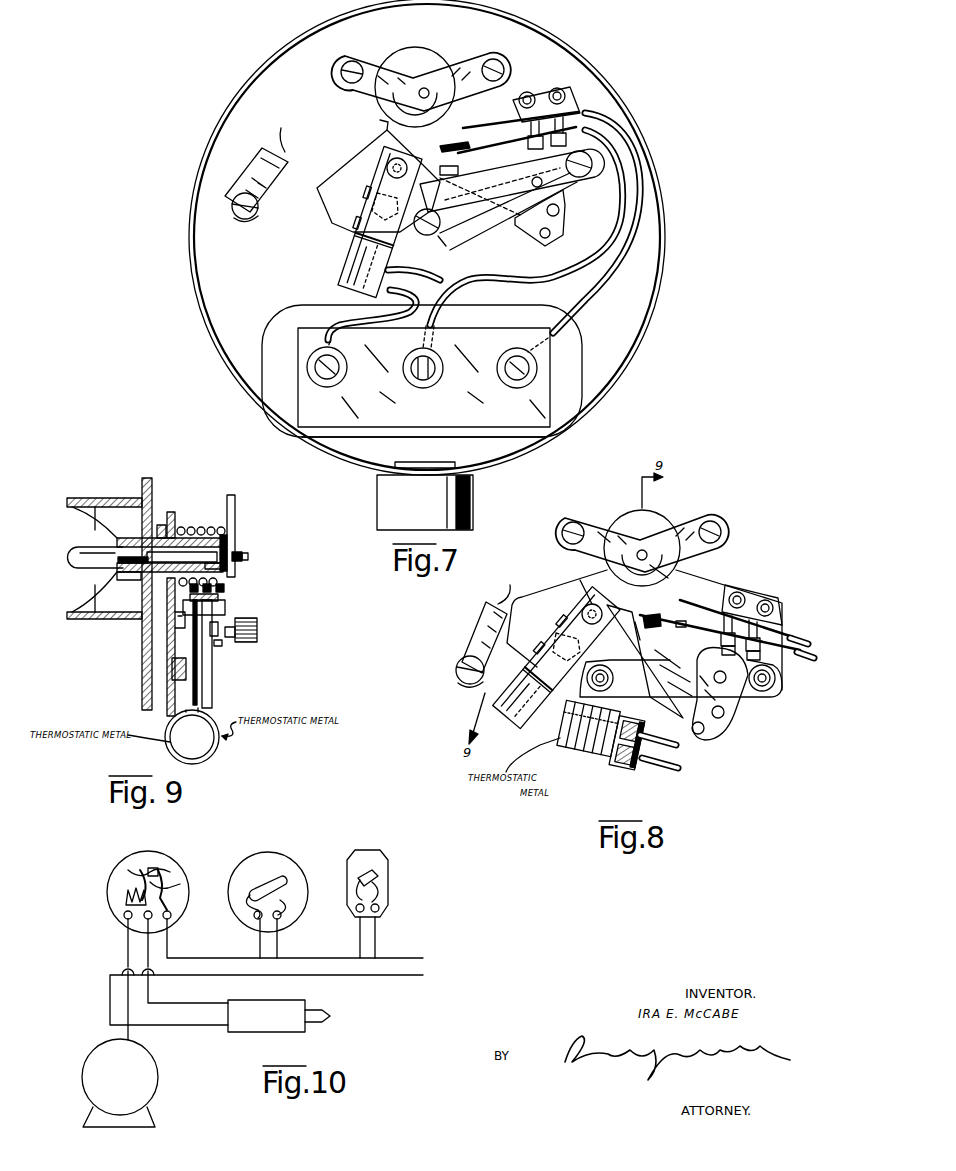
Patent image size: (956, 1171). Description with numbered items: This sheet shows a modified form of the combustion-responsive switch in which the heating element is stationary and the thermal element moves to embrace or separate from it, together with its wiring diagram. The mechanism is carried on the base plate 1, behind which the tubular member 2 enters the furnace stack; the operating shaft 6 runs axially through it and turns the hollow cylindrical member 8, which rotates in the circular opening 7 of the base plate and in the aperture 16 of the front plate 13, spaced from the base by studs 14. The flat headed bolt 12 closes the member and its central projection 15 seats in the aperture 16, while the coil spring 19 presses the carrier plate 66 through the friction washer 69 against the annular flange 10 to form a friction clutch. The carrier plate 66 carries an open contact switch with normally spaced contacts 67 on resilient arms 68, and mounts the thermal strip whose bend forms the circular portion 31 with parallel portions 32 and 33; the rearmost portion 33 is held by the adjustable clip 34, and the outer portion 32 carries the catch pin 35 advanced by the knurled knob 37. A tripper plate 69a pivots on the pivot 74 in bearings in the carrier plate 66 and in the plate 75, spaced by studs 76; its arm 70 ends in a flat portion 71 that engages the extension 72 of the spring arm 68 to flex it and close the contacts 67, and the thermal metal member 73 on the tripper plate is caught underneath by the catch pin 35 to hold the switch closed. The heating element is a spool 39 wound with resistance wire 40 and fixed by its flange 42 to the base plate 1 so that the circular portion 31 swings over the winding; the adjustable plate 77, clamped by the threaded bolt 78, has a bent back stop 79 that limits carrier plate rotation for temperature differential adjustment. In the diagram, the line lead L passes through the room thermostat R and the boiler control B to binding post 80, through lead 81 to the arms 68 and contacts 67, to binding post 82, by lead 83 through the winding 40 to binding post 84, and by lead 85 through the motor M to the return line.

In FIG. 7, the base plate 1 is at (638, 336).
In FIG. 9, the base plate 1 is at (140, 490).
In FIG. 9, the tubular member 2 is at (70, 518).
In FIG. 9, the operating shaft 6 is at (73, 553).
In FIG. 9, the circular opening 7 is at (145, 544).
In FIG. 9, the hollow cylindrical member 8 is at (124, 580).
In FIG. 9, the annular flange 10 is at (162, 524).
In FIG. 9, the flat headed bolt 12 is at (222, 594).
In FIG. 7, the front plate 13 is at (372, 64).
In FIG. 9, the front plate 13 is at (237, 540).
In FIG. 8, the front plate 13 is at (692, 528).
In FIG. 7, the studs 14 is at (341, 77).
In FIG. 8, the studs 14 is at (585, 530).
In FIG. 9, the central projection 15 is at (250, 556).
In FIG. 8, the central projection 15 is at (668, 580).
In FIG. 7, the aperture 16 is at (415, 87).
In FIG. 9, the aperture 16 is at (242, 568).
In FIG. 8, the aperture 16 is at (665, 525).
In FIG. 9, the coil spring 19 is at (226, 520).
In FIG. 7, the circular portion 31 is at (345, 264).
In FIG. 9, the circular portion 31 is at (218, 740).
In FIG. 8, the circular portion 31 is at (528, 722).
In FIG. 7, the outer parallel portion 32 is at (355, 233).
In FIG. 9, the outer parallel portion 32 is at (212, 702).
In FIG. 8, the outer parallel portion 32 is at (575, 692).
In FIG. 9, the rearmost parallel portion 33 is at (168, 710).
In FIG. 7, the adjustable clip 34 is at (358, 198).
In FIG. 9, the adjustable clip 34 is at (168, 668).
In FIG. 8, the adjustable clip 34 is at (555, 656).
In FIG. 7, the catch pin 35 is at (382, 125).
In FIG. 9, the catch pin 35 is at (168, 622).
In FIG. 8, the catch pin 35 is at (580, 612).
In FIG. 7, the knurled knob 37 is at (387, 166).
In FIG. 9, the knurled knob 37 is at (258, 630).
In FIG. 8, the knurled knob 37 is at (588, 604).
In FIG. 8, the spool 39 is at (560, 745).
In FIG. 8, the resistance wire 40 is at (578, 764).
In FIG. 10, the resistance wire 40 is at (118, 878).
In FIG. 8, the flange 42 is at (640, 772).
In FIG. 7, the carrier plate 66 is at (328, 200).
In FIG. 9, the carrier plate 66 is at (172, 512).
In FIG. 8, the carrier plate 66 is at (548, 592).
In FIG. 7, the contacts 67 is at (480, 130).
In FIG. 8, the contacts 67 is at (682, 610).
In FIG. 10, the contacts 67 is at (140, 866).
In FIG. 7, the resilient arms 68 is at (517, 106).
In FIG. 8, the resilient arms 68 is at (728, 592).
In FIG. 10, the resilient arms 68 is at (170, 862).
In FIG. 9, the friction washer 69 is at (200, 527).
In FIG. 7, the tripper plate 69a is at (568, 200).
In FIG. 8, the tripper plate 69a is at (732, 716).
In FIG. 7, the arm 70 is at (498, 176).
In FIG. 8, the arm 70 is at (678, 708).
In FIG. 7, the flat portion 71 is at (440, 164).
In FIG. 9, the flat portion 71 is at (258, 620).
In FIG. 8, the flat portion 71 is at (679, 627).
In FIG. 7, the extension 72 is at (470, 154).
In FIG. 9, the extension 72 is at (226, 610).
In FIG. 8, the extension 72 is at (646, 612).
In FIG. 7, the thermal metal member 73 is at (452, 222).
In FIG. 8, the thermal metal member 73 is at (645, 660).
In FIG. 7, the pivot 74 is at (540, 190).
In FIG. 9, the pivot 74 is at (214, 644).
In FIG. 8, the pivot 74 is at (725, 685).
In FIG. 7, the plate 75 is at (448, 246).
In FIG. 9, the plate 75 is at (226, 646).
In FIG. 7, the studs 76 is at (585, 180).
In FIG. 8, the studs 76 is at (610, 690).
In FIG. 7, the adjustable plate 77 is at (268, 170).
In FIG. 8, the adjustable plate 77 is at (494, 632).
In FIG. 7, the threaded bolt 78 is at (232, 205).
In FIG. 8, the threaded bolt 78 is at (457, 665).
In FIG. 7, the bent back stop 79 is at (283, 142).
In FIG. 8, the bent back stop 79 is at (504, 608).
In FIG. 7, the binding post 80 is at (552, 372).
In FIG. 10, the binding post 80 is at (172, 917).
In FIG. 7, the lead 81 is at (604, 278).
In FIG. 8, the lead 81 is at (805, 638).
In FIG. 10, the lead 81 is at (198, 882).
In FIG. 7, the binding post 82 is at (428, 390).
In FIG. 10, the binding post 82 is at (138, 930).
In FIG. 7, the lead 83 is at (338, 308).
In FIG. 8, the lead 83 is at (680, 768).
In FIG. 10, the lead 83 is at (124, 913).
In FIG. 7, the binding post 84 is at (307, 362).
In FIG. 10, the binding post 84 is at (144, 917).
In FIG. 10, the lead 85 is at (126, 958).
In FIG. 10, the boiler control B is at (296, 872).
In FIG. 10, the room thermostat R is at (390, 885).
In FIG. 10, the lead L is at (408, 956).
In FIG. 10, the transformer T is at (279, 1016).
In FIG. 10, the motor M is at (150, 1075).